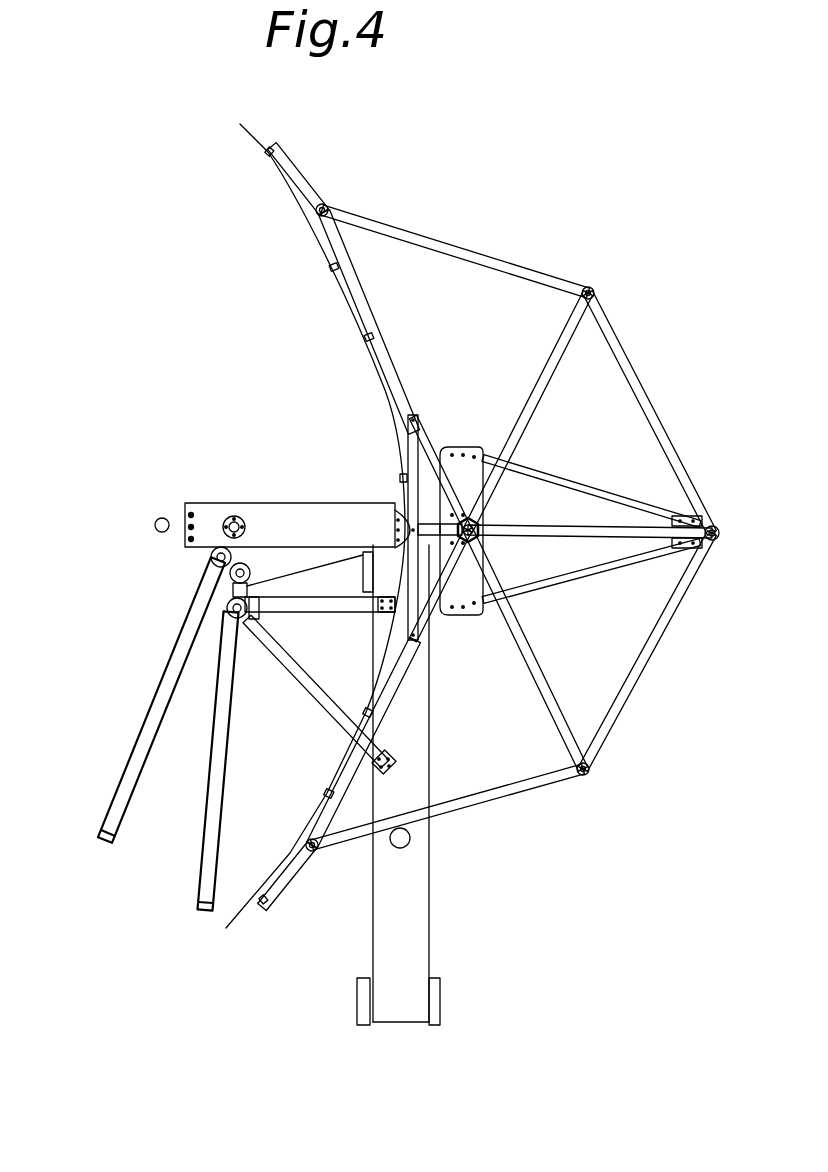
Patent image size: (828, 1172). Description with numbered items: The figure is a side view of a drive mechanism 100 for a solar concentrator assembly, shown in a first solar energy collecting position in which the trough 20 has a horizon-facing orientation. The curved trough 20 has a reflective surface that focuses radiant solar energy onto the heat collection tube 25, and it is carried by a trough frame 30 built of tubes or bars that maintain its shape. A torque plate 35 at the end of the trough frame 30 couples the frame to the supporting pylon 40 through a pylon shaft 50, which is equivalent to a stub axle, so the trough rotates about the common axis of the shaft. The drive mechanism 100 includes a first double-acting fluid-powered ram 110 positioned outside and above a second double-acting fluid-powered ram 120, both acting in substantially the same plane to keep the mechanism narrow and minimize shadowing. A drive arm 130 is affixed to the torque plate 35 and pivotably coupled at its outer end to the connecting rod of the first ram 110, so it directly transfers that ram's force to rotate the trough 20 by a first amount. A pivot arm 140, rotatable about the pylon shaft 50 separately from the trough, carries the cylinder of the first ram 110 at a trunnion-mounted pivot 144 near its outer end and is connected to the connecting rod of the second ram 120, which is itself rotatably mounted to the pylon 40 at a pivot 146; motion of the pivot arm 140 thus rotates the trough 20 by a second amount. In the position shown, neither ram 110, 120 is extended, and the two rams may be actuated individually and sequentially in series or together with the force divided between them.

The drive mechanism 100 is at (560, 190).
The trough 20 is at (280, 185).
The heat collection tube 25 is at (154, 525).
The trough frame 30 is at (636, 370).
The torque plate 35 is at (462, 595).
The supporting pylon 40 is at (415, 940).
The pylon shaft 50 is at (395, 505).
The first ram 110 is at (143, 728).
The second ram 120 is at (205, 866).
The drive arm 130 is at (210, 507).
The pivot arm 140 is at (283, 562).
The pivot 144 is at (214, 560).
The pivot 146 is at (227, 608).